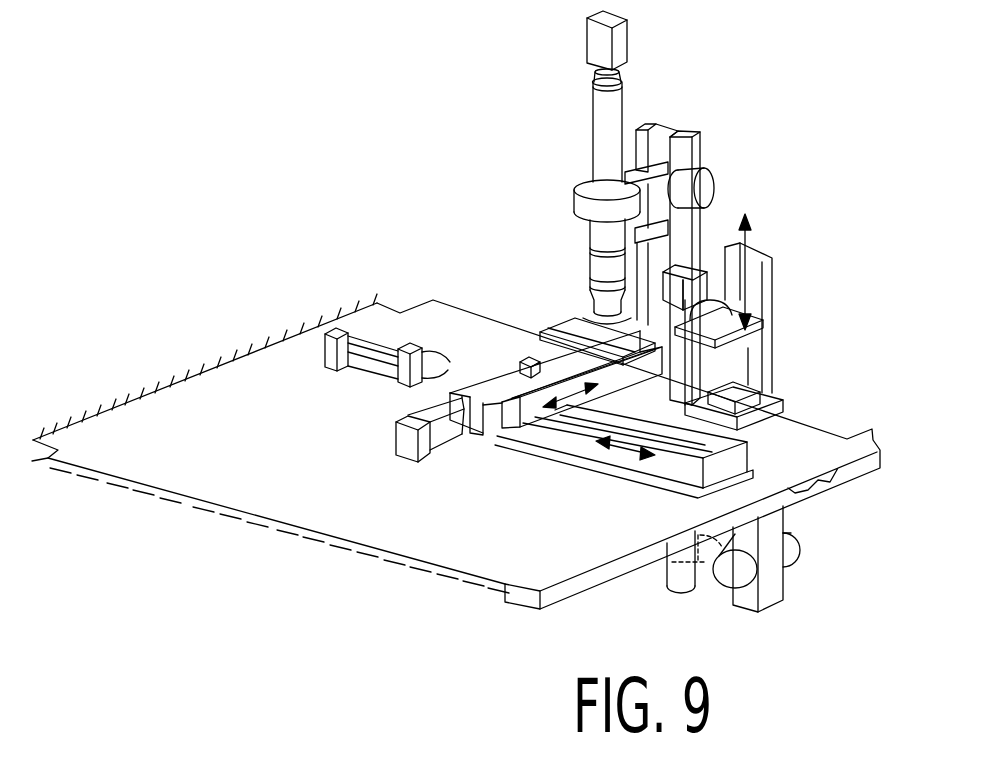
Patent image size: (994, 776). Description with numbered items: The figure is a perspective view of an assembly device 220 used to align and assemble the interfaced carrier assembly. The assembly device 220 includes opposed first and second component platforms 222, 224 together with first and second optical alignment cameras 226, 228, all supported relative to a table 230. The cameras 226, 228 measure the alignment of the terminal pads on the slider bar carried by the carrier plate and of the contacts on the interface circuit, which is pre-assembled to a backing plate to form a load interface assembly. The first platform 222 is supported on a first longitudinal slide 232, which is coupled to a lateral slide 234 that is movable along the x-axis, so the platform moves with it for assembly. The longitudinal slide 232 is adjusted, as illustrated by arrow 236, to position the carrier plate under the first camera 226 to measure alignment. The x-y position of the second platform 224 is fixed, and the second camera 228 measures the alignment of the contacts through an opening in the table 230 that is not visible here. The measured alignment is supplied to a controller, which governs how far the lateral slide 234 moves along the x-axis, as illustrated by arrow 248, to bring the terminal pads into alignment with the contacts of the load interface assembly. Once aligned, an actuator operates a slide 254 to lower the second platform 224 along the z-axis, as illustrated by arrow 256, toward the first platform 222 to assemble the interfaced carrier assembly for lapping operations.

The assembly device 220 is at (699, 220).
The first component platform 222 is at (562, 322).
The second component platform 224 is at (742, 330).
The first optical alignment camera 226 is at (590, 313).
The second optical alignment camera 228 is at (740, 388).
The table 230 is at (318, 438).
The first longitudinal slide 232 is at (507, 372).
The lateral slide 234 is at (673, 457).
The arrow 236 is at (573, 400).
The arrow 248 is at (620, 443).
The slide 254 is at (762, 309).
The arrow 256 is at (748, 263).